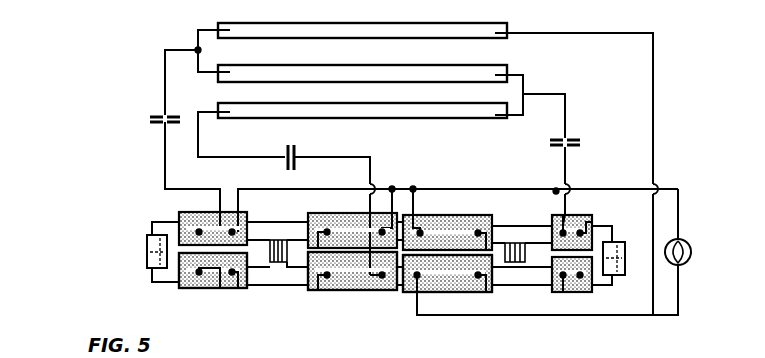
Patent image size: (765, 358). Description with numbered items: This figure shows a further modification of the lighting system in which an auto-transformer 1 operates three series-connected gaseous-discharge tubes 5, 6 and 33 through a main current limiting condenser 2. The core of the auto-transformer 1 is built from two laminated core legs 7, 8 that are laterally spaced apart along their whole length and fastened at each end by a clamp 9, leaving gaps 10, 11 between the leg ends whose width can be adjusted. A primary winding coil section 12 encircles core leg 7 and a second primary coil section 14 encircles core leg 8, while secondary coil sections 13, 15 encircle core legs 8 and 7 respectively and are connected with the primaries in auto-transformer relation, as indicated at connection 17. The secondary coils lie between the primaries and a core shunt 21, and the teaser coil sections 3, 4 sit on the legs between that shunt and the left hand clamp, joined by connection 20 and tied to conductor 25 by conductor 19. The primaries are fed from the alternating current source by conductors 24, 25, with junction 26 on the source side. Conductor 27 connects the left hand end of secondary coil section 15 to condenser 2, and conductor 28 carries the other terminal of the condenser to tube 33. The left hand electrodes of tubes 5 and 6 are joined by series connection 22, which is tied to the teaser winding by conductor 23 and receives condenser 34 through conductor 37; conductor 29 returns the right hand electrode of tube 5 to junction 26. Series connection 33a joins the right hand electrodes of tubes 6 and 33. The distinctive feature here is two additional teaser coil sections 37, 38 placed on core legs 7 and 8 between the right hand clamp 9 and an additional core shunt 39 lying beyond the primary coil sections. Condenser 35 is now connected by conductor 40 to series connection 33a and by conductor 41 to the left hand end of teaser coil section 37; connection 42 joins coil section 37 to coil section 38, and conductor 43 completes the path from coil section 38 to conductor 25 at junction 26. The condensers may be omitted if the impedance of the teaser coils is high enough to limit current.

The auto-transformer 1 is at (363, 302).
The main current limiting condenser 2 is at (286, 164).
The teaser winding coil section 3 is at (178, 212).
The teaser winding coil section 4 is at (200, 289).
The gaseous-discharge tube 5 is at (338, 26).
The gaseous-discharge tube 6 is at (345, 68).
The laminated core leg 7 is at (288, 264).
The laminated core leg 8 is at (277, 239).
The clamp 9 is at (626, 252).
The gap 10 is at (146, 248).
The gap 11 is at (618, 282).
The primary winding coil section 12 is at (476, 292).
The secondary winding coil section 13 is at (350, 214).
The primary winding coil section 14 is at (462, 215).
The secondary winding coil section 15 is at (320, 290).
The connection 17 is at (413, 189).
The conductor 19 is at (340, 189).
The connection 20 is at (176, 280).
The core shunt 21 is at (247, 286).
The series connection 22 is at (195, 40).
The conductor 23 is at (163, 182).
The conductor 24 is at (563, 316).
The conductor 25 is at (680, 208).
The junction 26 is at (555, 190).
The conductor 27 is at (375, 162).
The conductor 28 is at (199, 141).
The conductor 29 is at (568, 33).
The third tube 33 is at (382, 106).
The series connection 33a is at (525, 85).
The condenser 34 is at (162, 124).
The condenser 35 is at (581, 143).
The teaser winding coil section 37 is at (164, 81).
The teaser winding coil section 38 is at (588, 292).
The core shunt 39 is at (514, 242).
The conductor 40 is at (566, 100).
The conductor 41 is at (567, 168).
The connection 42 is at (618, 220).
The conductor 43 is at (547, 205).